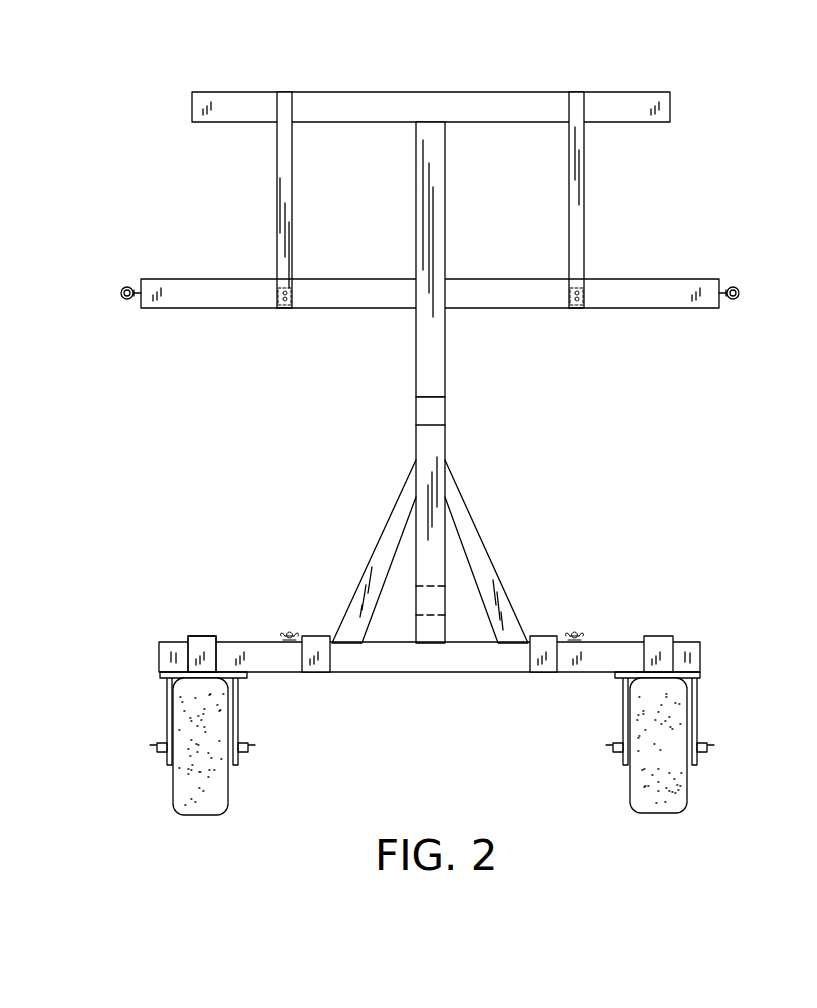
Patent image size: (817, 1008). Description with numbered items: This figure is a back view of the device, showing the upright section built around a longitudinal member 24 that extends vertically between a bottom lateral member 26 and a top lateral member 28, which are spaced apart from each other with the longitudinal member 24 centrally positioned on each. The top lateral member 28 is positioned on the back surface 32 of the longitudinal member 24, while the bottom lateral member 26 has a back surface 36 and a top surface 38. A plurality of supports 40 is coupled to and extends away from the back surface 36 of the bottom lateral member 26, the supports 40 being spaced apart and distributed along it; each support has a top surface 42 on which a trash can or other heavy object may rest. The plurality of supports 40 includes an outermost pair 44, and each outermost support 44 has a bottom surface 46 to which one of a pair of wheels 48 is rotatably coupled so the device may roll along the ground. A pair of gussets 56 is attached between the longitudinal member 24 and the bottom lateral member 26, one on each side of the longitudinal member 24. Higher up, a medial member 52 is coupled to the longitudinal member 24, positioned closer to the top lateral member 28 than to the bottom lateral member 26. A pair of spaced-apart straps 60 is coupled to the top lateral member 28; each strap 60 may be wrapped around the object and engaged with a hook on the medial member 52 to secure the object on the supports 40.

The longitudinal member 24 is at (445, 370).
The bottom lateral member 26 is at (598, 642).
The top lateral member 28 is at (495, 92).
The back surface 32 is at (433, 362).
The back surface 36 is at (440, 672).
The top surface 38 is at (258, 642).
The supports 40 is at (302, 668).
The top surface 42 is at (203, 636).
The outermost pair of supports 44 is at (188, 656).
The bottom surface 46 is at (200, 676).
The wheels 48 is at (222, 800).
The medial member 52 is at (672, 279).
The gussets 56 is at (376, 546).
The straps 60 is at (277, 182).